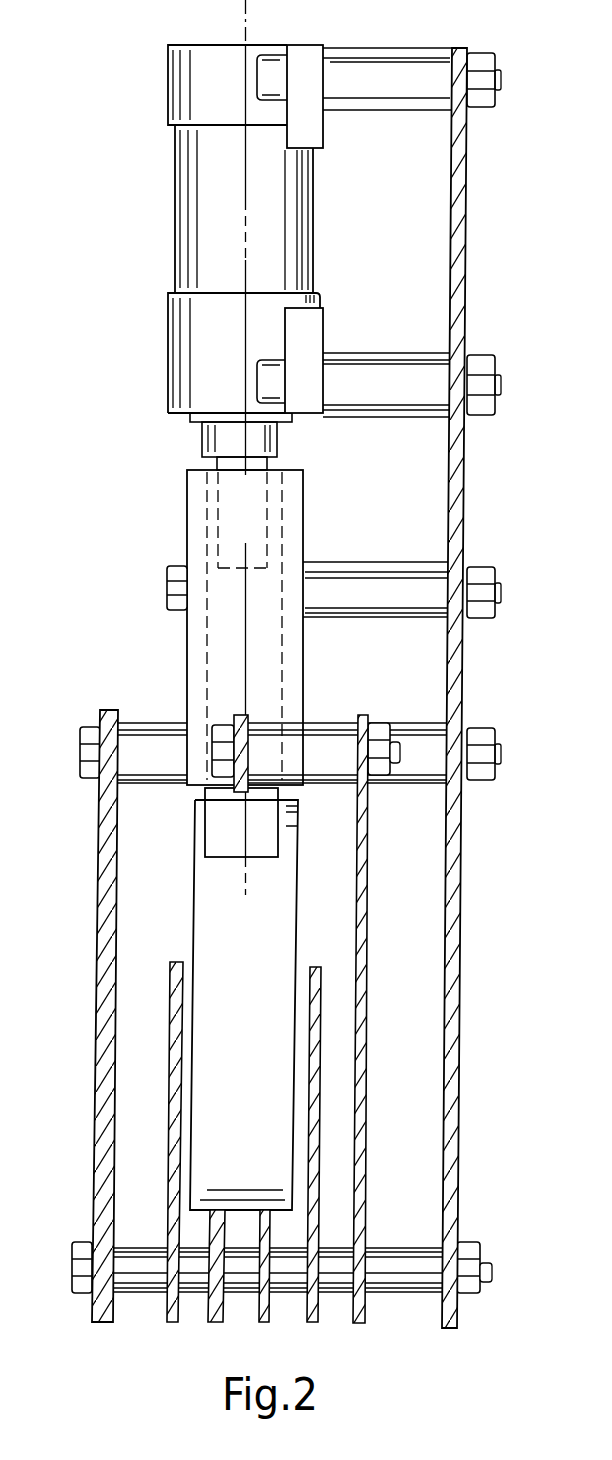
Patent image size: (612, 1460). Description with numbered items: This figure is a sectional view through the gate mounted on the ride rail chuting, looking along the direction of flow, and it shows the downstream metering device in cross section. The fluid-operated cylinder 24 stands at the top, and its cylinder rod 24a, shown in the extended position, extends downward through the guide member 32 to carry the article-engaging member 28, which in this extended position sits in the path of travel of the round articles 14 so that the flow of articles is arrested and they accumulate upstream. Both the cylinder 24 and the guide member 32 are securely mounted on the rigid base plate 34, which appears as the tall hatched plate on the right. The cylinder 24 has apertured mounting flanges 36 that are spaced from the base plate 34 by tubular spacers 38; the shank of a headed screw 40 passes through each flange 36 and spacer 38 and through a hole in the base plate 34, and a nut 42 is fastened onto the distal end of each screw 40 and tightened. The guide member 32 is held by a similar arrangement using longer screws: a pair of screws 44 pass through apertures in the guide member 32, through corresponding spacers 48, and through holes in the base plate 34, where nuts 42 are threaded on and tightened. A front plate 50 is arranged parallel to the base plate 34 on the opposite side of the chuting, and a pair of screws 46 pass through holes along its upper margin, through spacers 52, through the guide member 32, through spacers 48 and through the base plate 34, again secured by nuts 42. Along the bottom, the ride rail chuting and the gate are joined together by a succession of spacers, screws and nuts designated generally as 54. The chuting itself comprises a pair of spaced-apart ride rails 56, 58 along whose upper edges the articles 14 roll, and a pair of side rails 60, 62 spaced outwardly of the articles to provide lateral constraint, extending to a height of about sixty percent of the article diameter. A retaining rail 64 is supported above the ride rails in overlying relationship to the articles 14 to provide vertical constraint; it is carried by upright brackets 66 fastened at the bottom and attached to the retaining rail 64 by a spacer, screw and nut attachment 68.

The round articles 14 is at (297, 898).
The fluid-operated cylinder 24 is at (315, 207).
The cylinder rod 24a is at (200, 485).
The article-engaging member 28 is at (218, 860).
The guide member 32 is at (305, 480).
The base plate 34 is at (460, 195).
The apertured mounting flanges 36 is at (302, 62).
The tubular spacers 38 is at (400, 110).
The bolt head 40 is at (267, 53).
The nut 42 is at (485, 53).
The screws 44 is at (170, 585).
The screws 46 is at (77, 752).
The spacers 48 is at (348, 562).
The front plate 50 is at (95, 1038).
The spacers 52 is at (162, 787).
The spacers, screws and nuts 54 is at (478, 1302).
The ride rail 56 is at (207, 1307).
The ride rail 58 is at (268, 1295).
The side rail 60 is at (168, 1052).
The side rail 62 is at (320, 1043).
The retaining rail 64 is at (243, 715).
The upright brackets 66 is at (363, 922).
The spacer, screw, and nut attachment 68 is at (386, 726).